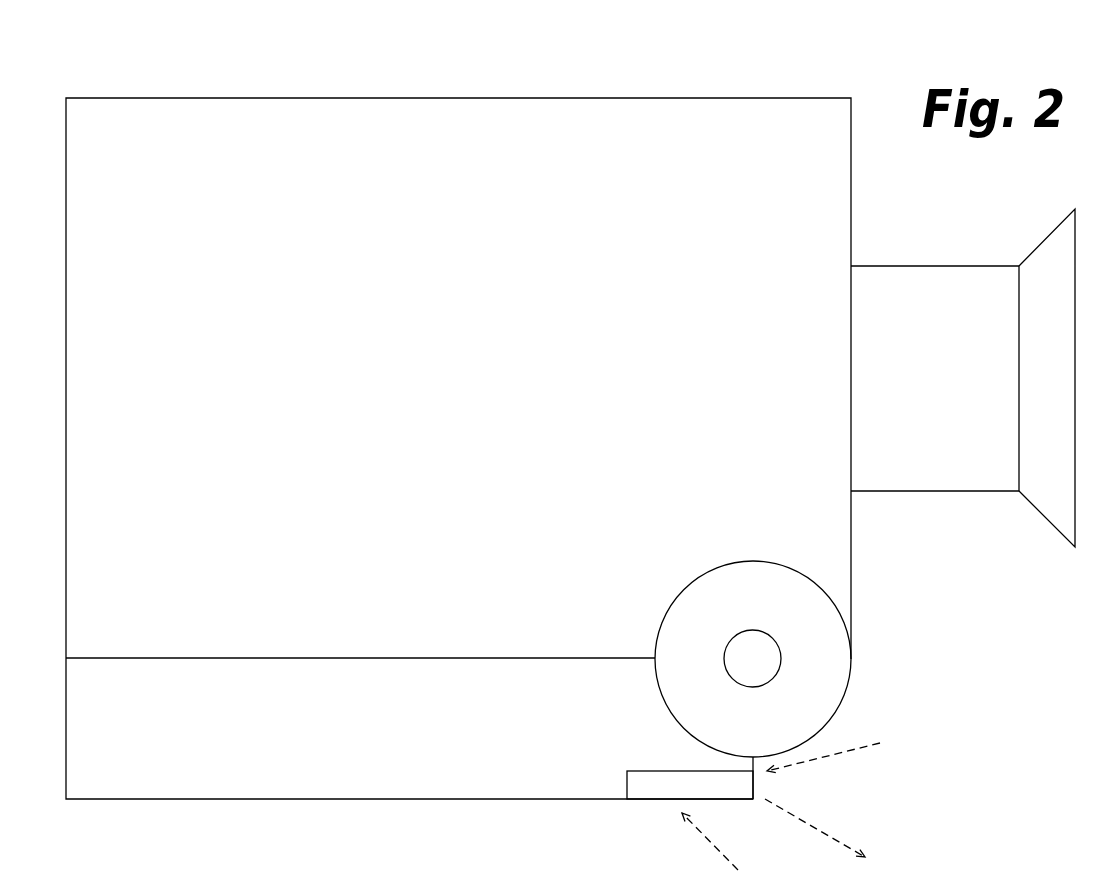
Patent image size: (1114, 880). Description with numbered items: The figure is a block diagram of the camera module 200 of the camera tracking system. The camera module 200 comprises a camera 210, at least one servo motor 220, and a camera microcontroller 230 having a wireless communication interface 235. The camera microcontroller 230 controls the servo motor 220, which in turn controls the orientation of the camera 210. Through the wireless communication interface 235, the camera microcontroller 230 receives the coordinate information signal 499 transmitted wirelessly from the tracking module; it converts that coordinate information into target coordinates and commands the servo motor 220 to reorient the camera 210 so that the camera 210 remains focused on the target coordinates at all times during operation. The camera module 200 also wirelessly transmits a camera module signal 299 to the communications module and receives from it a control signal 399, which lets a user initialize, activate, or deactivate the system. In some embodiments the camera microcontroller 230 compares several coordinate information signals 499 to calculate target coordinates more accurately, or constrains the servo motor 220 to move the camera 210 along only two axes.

The camera module 200 is at (458, 415).
The camera 210 is at (758, 378).
The servo motor 220 is at (753, 680).
The camera microcontroller 230 is at (360, 698).
The wireless communication interface 235 is at (690, 785).
The camera module signal 299 is at (815, 828).
The control signal 399 is at (702, 841).
The coordinate information signal 499 is at (823, 766).